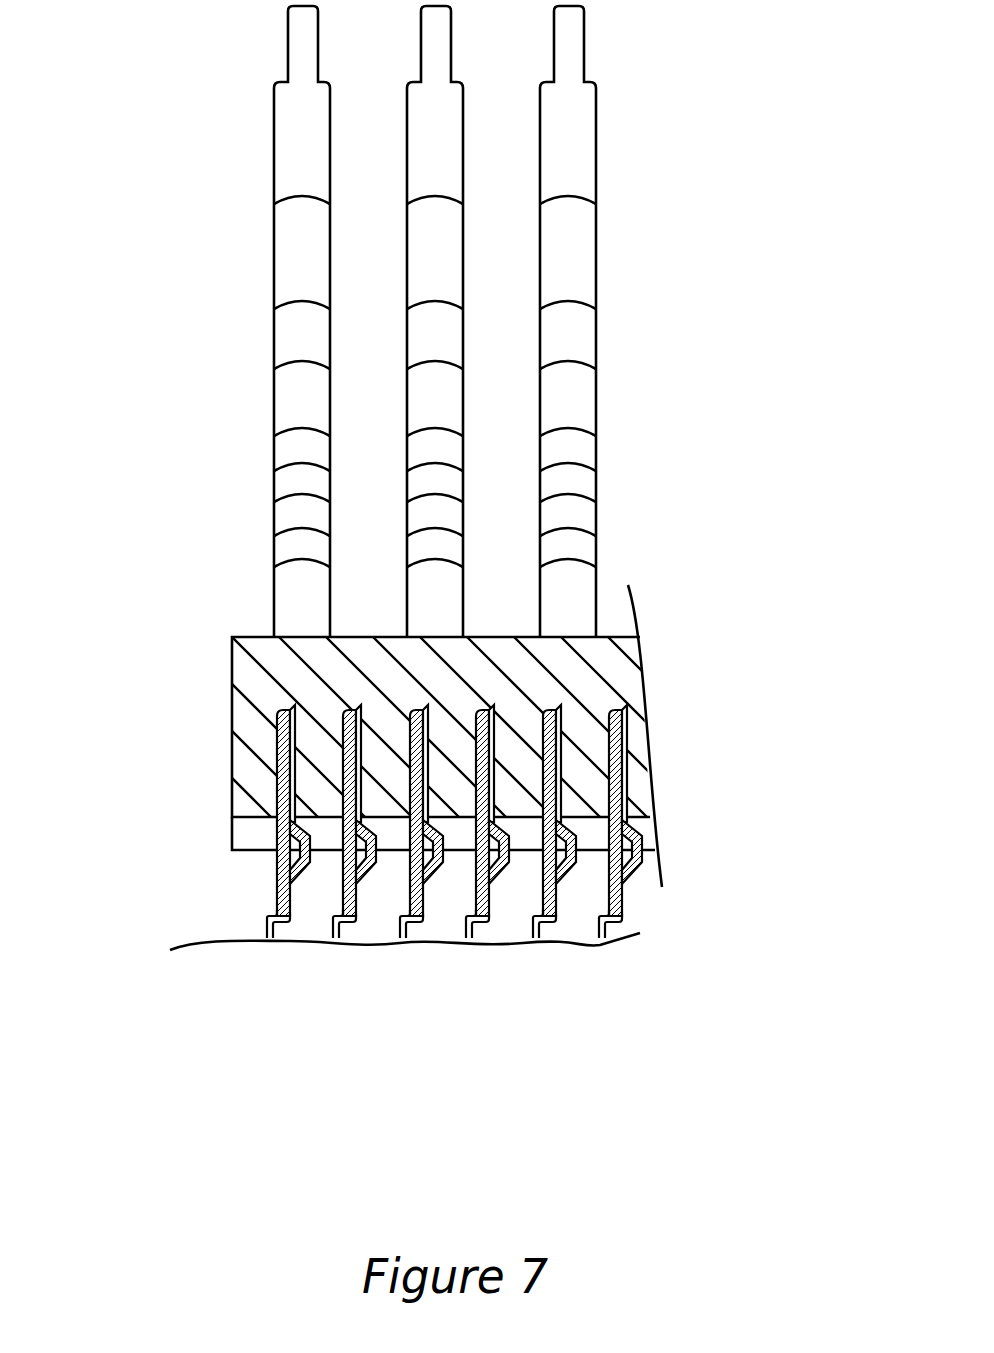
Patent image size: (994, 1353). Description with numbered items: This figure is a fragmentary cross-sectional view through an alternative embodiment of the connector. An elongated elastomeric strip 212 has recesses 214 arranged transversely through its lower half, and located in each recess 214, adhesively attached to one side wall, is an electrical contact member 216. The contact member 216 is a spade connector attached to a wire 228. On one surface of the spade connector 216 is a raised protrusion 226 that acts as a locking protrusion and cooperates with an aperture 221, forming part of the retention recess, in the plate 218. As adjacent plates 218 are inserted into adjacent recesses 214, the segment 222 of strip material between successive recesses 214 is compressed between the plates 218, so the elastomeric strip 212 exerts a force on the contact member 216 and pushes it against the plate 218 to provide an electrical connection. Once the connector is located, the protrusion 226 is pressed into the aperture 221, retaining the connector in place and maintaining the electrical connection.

The elongated elastomeric strip 212 is at (250, 671).
The recess 214 is at (350, 801).
The electrical contact member 216 is at (713, 814).
The plate 218 is at (625, 795).
The aperture 221 is at (627, 875).
The segment 222 is at (392, 819).
The raised protrusion 226 is at (643, 852).
The wire 228 is at (570, 52).